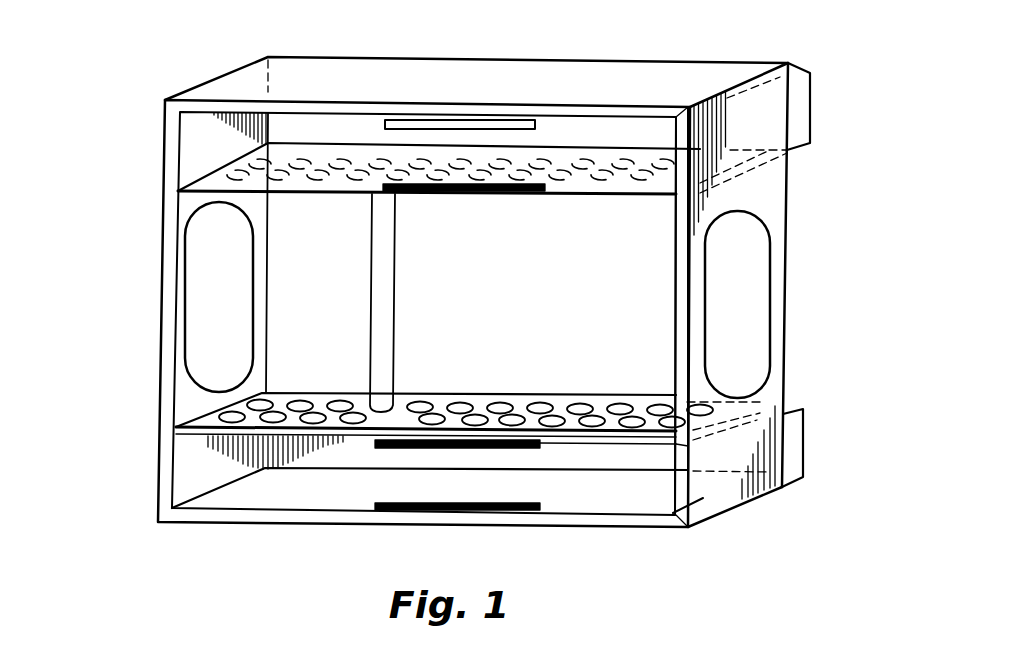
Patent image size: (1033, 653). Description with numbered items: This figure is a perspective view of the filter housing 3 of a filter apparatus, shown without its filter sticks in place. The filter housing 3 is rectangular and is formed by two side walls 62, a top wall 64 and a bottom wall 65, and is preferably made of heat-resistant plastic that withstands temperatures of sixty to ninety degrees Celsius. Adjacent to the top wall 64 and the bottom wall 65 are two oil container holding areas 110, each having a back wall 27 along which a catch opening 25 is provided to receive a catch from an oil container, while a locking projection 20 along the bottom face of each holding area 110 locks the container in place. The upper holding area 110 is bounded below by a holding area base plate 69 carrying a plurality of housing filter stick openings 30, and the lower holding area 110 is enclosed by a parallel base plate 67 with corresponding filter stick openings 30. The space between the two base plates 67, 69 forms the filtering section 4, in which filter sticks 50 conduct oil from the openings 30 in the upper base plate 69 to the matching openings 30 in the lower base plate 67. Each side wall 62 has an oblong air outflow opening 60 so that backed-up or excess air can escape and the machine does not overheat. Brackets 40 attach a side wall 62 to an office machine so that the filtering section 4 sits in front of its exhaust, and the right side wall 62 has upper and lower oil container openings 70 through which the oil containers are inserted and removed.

The filter housing 3 is at (145, 510).
The filtering section 4 is at (636, 309).
The locking projection 20 is at (404, 183).
The catch opening 25 is at (497, 120).
The back wall 27 is at (615, 458).
The housing filter stick openings 30 is at (623, 172).
The bracket 40 is at (803, 102).
The filter stick 50 is at (410, 290).
The air outflow opening 60 is at (207, 265).
The side wall 62 is at (192, 400).
The top wall 64 is at (316, 72).
The bottom wall 65 is at (238, 500).
The base plate 67 is at (630, 433).
The holding area base plate 69 is at (210, 181).
The oil container opening 70 is at (734, 108).
The oil container holding area 110 is at (587, 130).